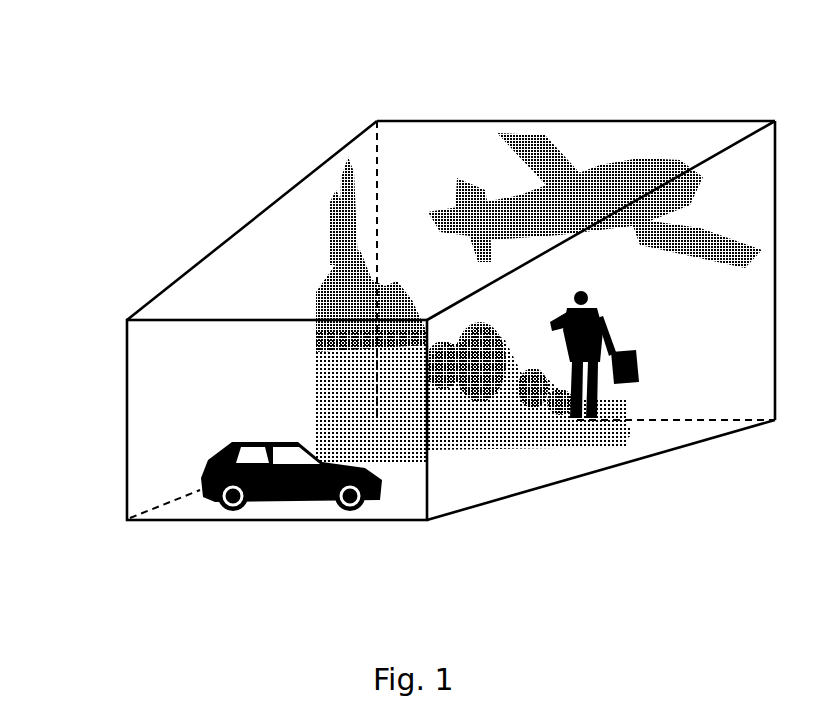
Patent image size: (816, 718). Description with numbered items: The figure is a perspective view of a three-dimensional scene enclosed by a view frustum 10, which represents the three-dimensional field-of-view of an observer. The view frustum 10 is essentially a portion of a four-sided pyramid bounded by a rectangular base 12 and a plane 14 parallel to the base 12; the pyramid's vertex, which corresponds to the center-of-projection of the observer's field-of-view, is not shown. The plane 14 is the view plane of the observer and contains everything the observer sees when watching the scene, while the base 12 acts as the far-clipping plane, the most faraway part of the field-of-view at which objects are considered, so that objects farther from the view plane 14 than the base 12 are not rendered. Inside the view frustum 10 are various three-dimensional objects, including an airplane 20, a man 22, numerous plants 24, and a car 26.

The view frustum 10 is at (451, 279).
The rectangular base 12 is at (452, 292).
The plane 14 is at (229, 414).
The airplane 20 is at (595, 153).
The man 22 is at (647, 396).
The plants 24 is at (494, 364).
The car 26 is at (310, 530).